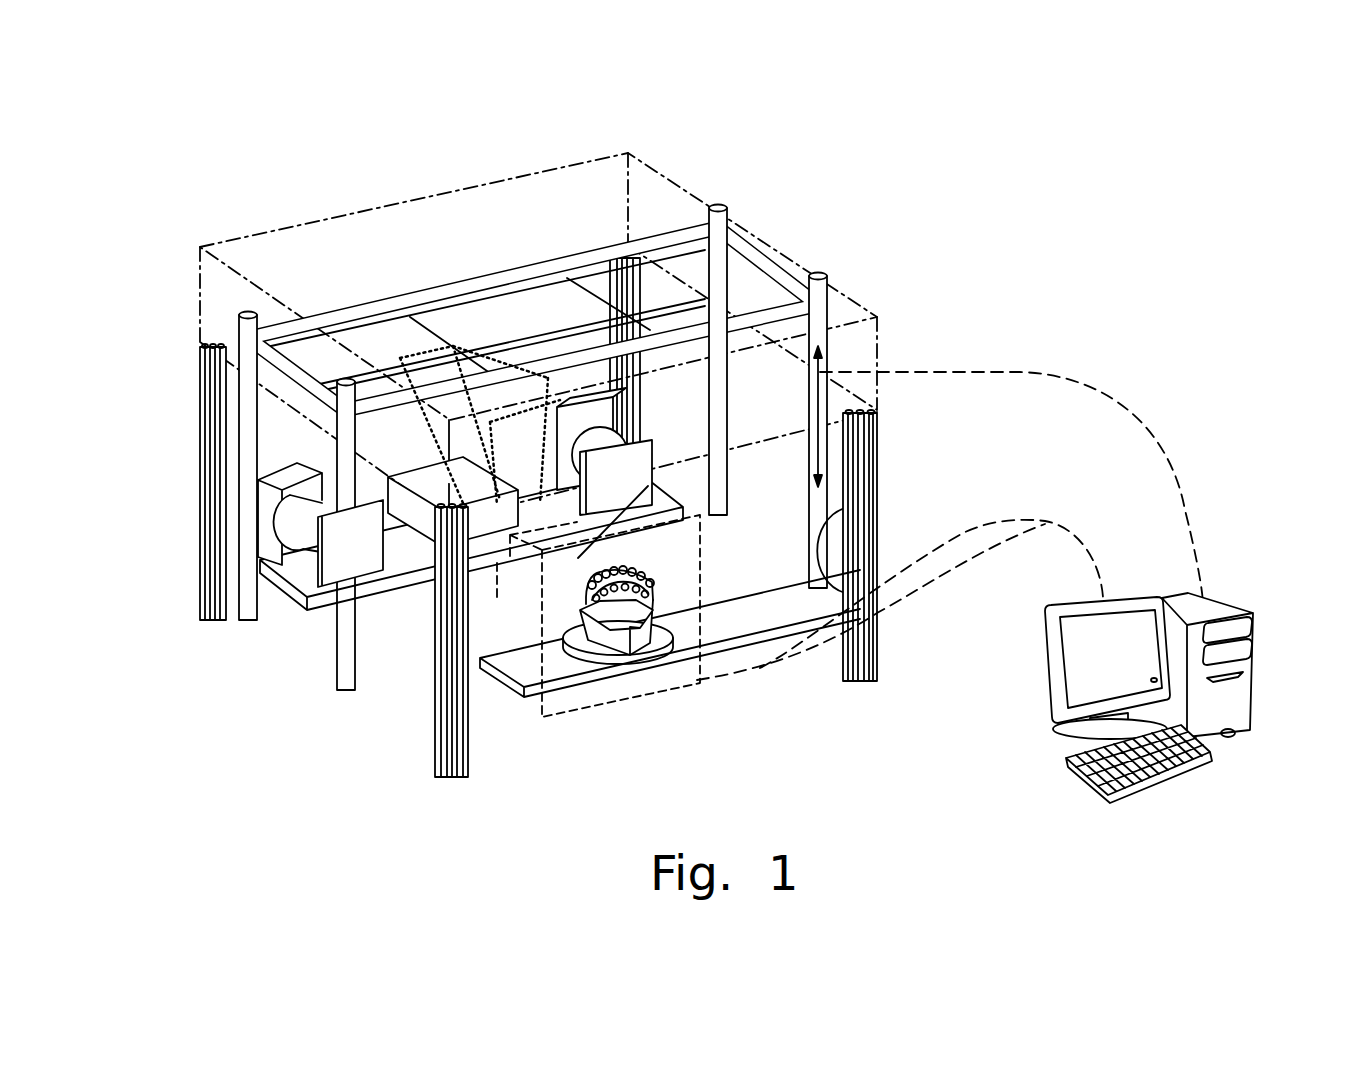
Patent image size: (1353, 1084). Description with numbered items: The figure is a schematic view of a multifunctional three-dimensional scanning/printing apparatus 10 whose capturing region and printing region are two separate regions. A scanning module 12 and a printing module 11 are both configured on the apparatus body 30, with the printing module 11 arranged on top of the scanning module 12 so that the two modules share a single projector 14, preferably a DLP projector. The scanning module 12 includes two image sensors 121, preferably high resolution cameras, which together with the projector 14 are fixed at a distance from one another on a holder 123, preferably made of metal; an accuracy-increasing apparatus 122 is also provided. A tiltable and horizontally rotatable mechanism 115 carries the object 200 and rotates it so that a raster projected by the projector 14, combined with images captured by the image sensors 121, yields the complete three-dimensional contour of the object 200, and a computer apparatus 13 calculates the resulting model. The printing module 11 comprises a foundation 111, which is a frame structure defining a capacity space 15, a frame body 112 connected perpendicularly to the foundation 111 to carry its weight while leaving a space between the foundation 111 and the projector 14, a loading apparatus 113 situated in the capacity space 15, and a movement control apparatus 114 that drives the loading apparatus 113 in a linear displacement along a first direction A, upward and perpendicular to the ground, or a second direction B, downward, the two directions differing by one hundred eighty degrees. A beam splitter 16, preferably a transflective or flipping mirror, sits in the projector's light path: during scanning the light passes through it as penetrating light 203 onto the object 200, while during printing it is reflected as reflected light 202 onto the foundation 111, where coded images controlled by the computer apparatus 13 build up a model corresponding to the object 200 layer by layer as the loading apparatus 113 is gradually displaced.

The multifunctional 3D scanning/printing apparatus 10 is at (166, 127).
The apparatus body 30 is at (538, 306).
The capacity space 15 is at (333, 237).
The printing module 11 is at (574, 419).
The foundation 111 is at (200, 273).
The frame body 112 is at (457, 720).
The loading apparatus 113 is at (503, 313).
The movement control apparatus 114 is at (836, 323).
The tiltable and horizontally rotatable mechanism 115 is at (808, 597).
The first direction A is at (822, 362).
The second direction B is at (814, 465).
The scanning module 12 is at (438, 608).
The image sensor 121 is at (328, 505).
The accuracy-increasing apparatus 122 is at (327, 555).
The holder 123 is at (283, 590).
The projector 14 is at (427, 473).
The beam splitter 16 is at (613, 503).
The reflected light 202 is at (517, 470).
The penetrating light 203 is at (543, 590).
The object 200 is at (611, 645).
The computer apparatus 13 is at (1260, 642).